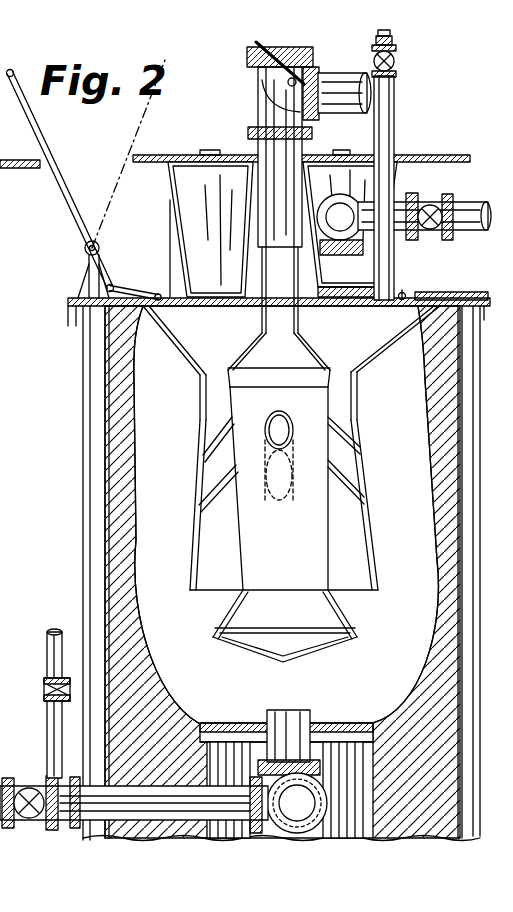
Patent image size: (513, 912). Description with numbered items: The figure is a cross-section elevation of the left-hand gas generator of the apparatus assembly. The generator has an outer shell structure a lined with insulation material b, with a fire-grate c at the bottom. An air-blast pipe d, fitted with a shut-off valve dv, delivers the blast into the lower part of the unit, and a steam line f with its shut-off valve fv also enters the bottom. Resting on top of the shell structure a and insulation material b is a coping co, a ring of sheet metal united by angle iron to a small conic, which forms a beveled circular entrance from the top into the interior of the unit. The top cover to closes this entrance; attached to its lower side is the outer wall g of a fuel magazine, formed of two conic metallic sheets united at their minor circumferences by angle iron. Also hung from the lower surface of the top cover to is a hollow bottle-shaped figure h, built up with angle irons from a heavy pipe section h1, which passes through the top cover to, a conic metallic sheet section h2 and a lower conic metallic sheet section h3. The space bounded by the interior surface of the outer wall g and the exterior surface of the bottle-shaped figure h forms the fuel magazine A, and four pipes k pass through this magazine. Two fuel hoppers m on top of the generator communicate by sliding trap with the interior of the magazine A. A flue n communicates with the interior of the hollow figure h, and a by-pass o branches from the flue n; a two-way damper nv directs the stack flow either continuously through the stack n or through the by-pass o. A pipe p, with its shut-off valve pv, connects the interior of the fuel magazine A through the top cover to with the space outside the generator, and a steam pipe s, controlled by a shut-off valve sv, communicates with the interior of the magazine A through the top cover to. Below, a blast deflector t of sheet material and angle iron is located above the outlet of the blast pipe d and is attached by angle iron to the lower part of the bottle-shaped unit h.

The shell structure a is at (84, 494).
The insulation material b is at (113, 526).
The fire-grate c is at (232, 730).
The air-blast pipe d is at (302, 712).
The shut-off valve on pipe d dv is at (28, 790).
The steam line f is at (50, 643).
The shut-off valve on pipe f fv is at (46, 690).
The outer wall of fuel magazine g is at (200, 405).
The hollow bottle-shaped figure h is at (263, 570).
The heavy pipe section h1 is at (262, 325).
The conic metallic sheet section h2 is at (305, 350).
The conic metallic sheet section h3 is at (238, 538).
The pipe passing through fuel magazine k is at (205, 472).
The fuel magazine A is at (340, 555).
The blast deflector t is at (232, 632).
The fuel hopper m is at (192, 174).
The flue n is at (250, 57).
The two-way damper nv is at (296, 78).
The by-pass o is at (337, 82).
The steam pipe s is at (394, 106).
The shut-off valve on pipe s sv is at (396, 60).
The pipe p is at (398, 208).
The shut-off valve on pipe p pv is at (437, 203).
The top cover to is at (404, 294).
The coping co is at (465, 292).